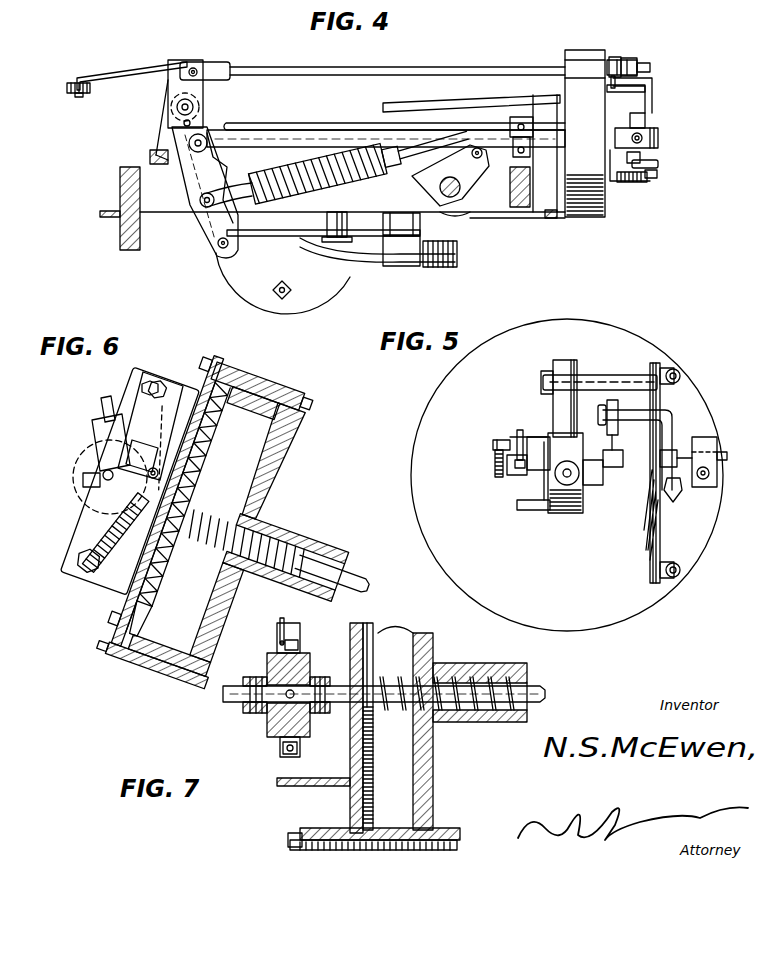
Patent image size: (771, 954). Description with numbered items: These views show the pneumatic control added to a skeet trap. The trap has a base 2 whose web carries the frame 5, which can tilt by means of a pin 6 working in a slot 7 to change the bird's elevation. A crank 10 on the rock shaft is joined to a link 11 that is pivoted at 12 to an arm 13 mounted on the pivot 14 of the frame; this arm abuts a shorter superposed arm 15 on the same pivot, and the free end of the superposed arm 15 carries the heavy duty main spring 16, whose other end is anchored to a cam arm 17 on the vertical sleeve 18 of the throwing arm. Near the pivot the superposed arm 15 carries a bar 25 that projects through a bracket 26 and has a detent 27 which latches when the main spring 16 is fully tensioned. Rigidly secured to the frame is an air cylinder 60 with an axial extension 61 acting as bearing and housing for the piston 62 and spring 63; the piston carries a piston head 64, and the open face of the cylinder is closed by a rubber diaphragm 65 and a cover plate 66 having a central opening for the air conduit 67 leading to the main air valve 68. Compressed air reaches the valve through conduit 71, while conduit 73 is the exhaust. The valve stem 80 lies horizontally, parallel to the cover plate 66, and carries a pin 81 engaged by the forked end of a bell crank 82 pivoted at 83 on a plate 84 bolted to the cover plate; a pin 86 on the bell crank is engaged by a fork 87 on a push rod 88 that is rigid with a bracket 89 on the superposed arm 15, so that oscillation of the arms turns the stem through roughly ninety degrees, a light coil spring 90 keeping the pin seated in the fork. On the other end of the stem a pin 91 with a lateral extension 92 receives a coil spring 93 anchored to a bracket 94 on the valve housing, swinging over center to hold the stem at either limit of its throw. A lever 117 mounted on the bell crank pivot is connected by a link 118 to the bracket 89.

In FIG. 4, the base 2 is at (253, 292).
In FIG. 4, the frame 5 is at (663, 45).
In FIG. 4, the pin 6 is at (373, 180).
In FIG. 4, the slot 7 is at (325, 220).
In FIG. 5, the slot 7 is at (472, 474).
In FIG. 4, the crank 10 is at (435, 267).
In FIG. 4, the link 11 is at (372, 263).
In FIG. 4, the pivotal connection 12 is at (221, 247).
In FIG. 4, the arm 13 is at (217, 222).
In FIG. 4, the pivot 14 is at (176, 107).
In FIG. 4, the superposed arm 15 is at (186, 181).
In FIG. 4, the main spring 16 is at (347, 175).
In FIG. 4, the cam arm 17 is at (476, 166).
In FIG. 4, the sleeve 18 is at (470, 196).
In FIG. 4, the bar 25 is at (278, 130).
In FIG. 4, the bracket 26 is at (508, 121).
In FIG. 4, the detent 27 is at (538, 168).
In FIG. 4, the air cylinder 60 is at (583, 217).
In FIG. 6, the air cylinder 60 is at (280, 380).
In FIG. 5, the air cylinder 60 is at (560, 330).
In FIG. 7, the air cylinder 60 is at (428, 656).
In FIG. 6, the axial extension 61 is at (300, 526).
In FIG. 7, the axial extension 61 is at (475, 665).
In FIG. 4, the piston 62 is at (337, 131).
In FIG. 6, the piston 62 is at (360, 568).
In FIG. 7, the piston 62 is at (542, 688).
In FIG. 6, the spring 63 is at (210, 540).
In FIG. 7, the spring 63 is at (447, 693).
In FIG. 6, the piston head 64 is at (170, 591).
In FIG. 7, the piston head 64 is at (372, 745).
In FIG. 6, the rubber diaphragm 65 is at (200, 460).
In FIG. 7, the rubber diaphragm 65 is at (362, 650).
In FIG. 6, the cover plate 66 is at (125, 606).
In FIG. 7, the cover plate 66 is at (352, 758).
In FIG. 7, the air conduit 67 is at (330, 716).
In FIG. 4, the main air valve 68 is at (641, 150).
In FIG. 6, the main air valve 68 is at (70, 482).
In FIG. 5, the main air valve 68 is at (583, 514).
In FIG. 7, the main air valve 68 is at (256, 714).
In FIG. 5, the conduit 71 is at (565, 482).
In FIG. 4, the exhaust conduit 73 is at (660, 136).
In FIG. 5, the exhaust conduit 73 is at (556, 369).
In FIG. 4, the valve stem 80 is at (606, 126).
In FIG. 5, the valve stem 80 is at (590, 496).
In FIG. 7, the valve stem 80 is at (268, 736).
In FIG. 4, the pin 81 is at (648, 118).
In FIG. 6, the pin 81 is at (103, 403).
In FIG. 5, the pin 81 is at (603, 400).
In FIG. 7, the pin 81 is at (281, 759).
In FIG. 4, the bell crank 82 is at (652, 92).
In FIG. 5, the bell crank 82 is at (666, 412).
In FIG. 6, the pivot 83 is at (95, 468).
In FIG. 5, the pivot 83 is at (676, 470).
In FIG. 4, the plate 84 is at (612, 92).
In FIG. 6, the plate 84 is at (80, 541).
In FIG. 5, the plate 84 is at (652, 541).
In FIG. 7, the plate 84 is at (303, 787).
In FIG. 4, the pin 86 is at (614, 58).
In FIG. 6, the pin 86 is at (156, 468).
In FIG. 5, the pin 86 is at (702, 440).
In FIG. 4, the fork 87 is at (628, 58).
In FIG. 6, the fork 87 is at (175, 448).
In FIG. 5, the fork 87 is at (715, 446).
In FIG. 4, the push rod 88 is at (372, 75).
In FIG. 5, the push rod 88 is at (708, 476).
In FIG. 4, the bracket 89 is at (190, 62).
In FIG. 6, the coil spring 90 is at (111, 531).
In FIG. 4, the pin 91 is at (658, 166).
In FIG. 5, the pin 91 is at (520, 430).
In FIG. 7, the pin 91 is at (278, 645).
In FIG. 4, the lateral extension 92 is at (657, 178).
In FIG. 5, the lateral extension 92 is at (503, 440).
In FIG. 7, the lateral extension 92 is at (286, 626).
In FIG. 4, the coil spring 93 is at (634, 183).
In FIG. 5, the coil spring 93 is at (495, 461).
In FIG. 4, the bracket 94 is at (612, 161).
In FIG. 5, the bracket 94 is at (520, 506).
In FIG. 4, the lever 117 is at (67, 88).
In FIG. 4, the link 118 is at (147, 70).